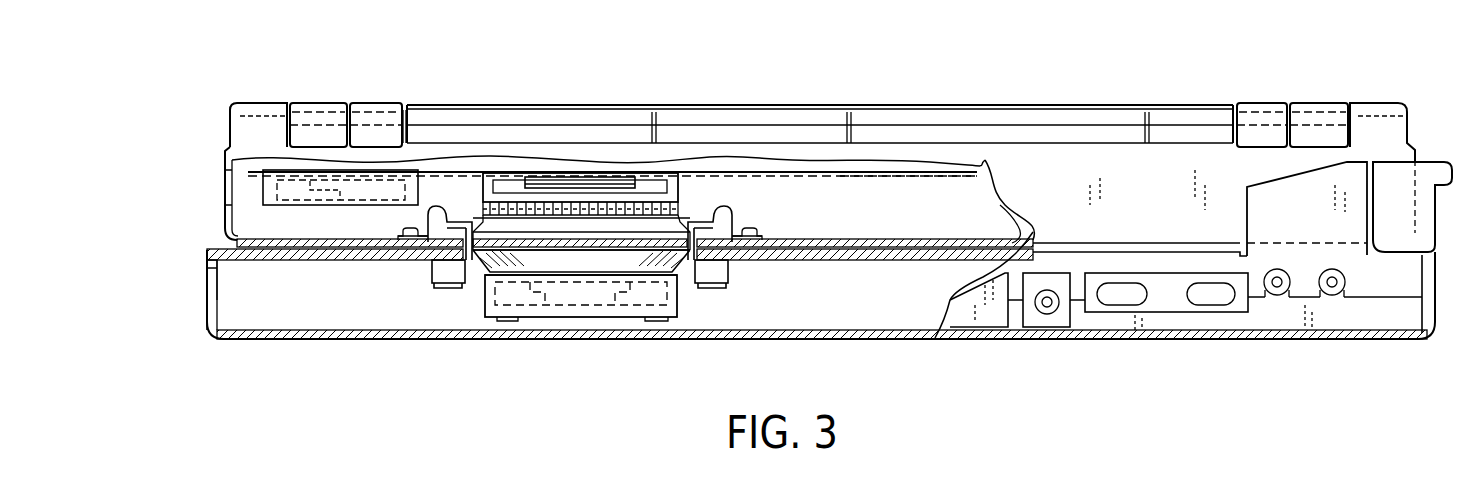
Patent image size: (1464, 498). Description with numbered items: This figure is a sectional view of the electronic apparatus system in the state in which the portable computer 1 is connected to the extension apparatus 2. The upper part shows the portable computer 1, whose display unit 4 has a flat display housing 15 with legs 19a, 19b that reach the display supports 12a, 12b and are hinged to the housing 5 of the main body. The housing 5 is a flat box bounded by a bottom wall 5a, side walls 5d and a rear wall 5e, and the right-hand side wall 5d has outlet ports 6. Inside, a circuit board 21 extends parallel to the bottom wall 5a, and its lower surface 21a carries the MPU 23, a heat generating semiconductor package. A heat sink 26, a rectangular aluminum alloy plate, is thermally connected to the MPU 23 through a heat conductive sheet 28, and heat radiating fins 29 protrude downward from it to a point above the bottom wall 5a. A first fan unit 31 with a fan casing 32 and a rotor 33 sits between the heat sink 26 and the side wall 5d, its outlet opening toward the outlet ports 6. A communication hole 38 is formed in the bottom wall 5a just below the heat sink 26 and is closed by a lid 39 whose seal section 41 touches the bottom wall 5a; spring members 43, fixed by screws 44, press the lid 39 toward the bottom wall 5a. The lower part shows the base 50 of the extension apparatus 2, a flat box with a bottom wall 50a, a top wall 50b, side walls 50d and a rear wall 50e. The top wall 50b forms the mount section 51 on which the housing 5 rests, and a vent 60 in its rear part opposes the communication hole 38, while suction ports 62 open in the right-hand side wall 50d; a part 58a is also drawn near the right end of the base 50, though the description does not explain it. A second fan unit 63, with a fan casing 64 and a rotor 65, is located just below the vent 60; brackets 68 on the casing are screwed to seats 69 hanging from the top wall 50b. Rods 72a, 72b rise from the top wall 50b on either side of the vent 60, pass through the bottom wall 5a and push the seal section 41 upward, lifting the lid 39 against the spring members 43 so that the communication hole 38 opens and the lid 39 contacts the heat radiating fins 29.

The portable computer 1 is at (1122, 90).
The extension apparatus 2 is at (329, 338).
The display unit 4 is at (812, 105).
The housing 5 is at (226, 149).
The bottom wall 5a is at (1020, 236).
The side wall 5d is at (226, 233).
The rear wall 5e is at (1025, 167).
The outlet ports 6 is at (226, 203).
The display support 12a is at (1375, 118).
The display support 12b is at (260, 115).
The display housing 15 is at (943, 115).
The leg 19a is at (1313, 110).
The leg 19b is at (322, 112).
The circuit board 21 is at (782, 172).
The lower surface 21a is at (863, 178).
The MPU 23 is at (568, 187).
The heat sink 26 is at (653, 193).
The heat conductive sheet 28 is at (607, 185).
The heat radiating fins 29 is at (585, 205).
The first fan unit 31 is at (357, 183).
The fan casing 32 is at (343, 202).
The rotor 33 is at (310, 200).
The communication hole 38 is at (642, 245).
The lid 39 is at (563, 207).
The seal section 41 is at (460, 205).
The spring member 43 is at (432, 206).
The screw 44 is at (398, 232).
The base 50 is at (990, 340).
The bottom wall 50a is at (850, 329).
The top wall 50b is at (913, 246).
The side wall 50d is at (208, 316).
The rear wall 50e is at (1196, 339).
The mount section 51 is at (963, 248).
The boss 58a is at (1397, 223).
The vent 60 is at (565, 265).
The suction ports 62 is at (212, 289).
The second fan unit 63 is at (667, 313).
The fan casing 64 is at (513, 307).
The rotor 65 is at (543, 297).
The brackets 68 is at (470, 327).
The seats 69 is at (436, 283).
The rod 72a is at (693, 207).
The rod 72b is at (513, 200).